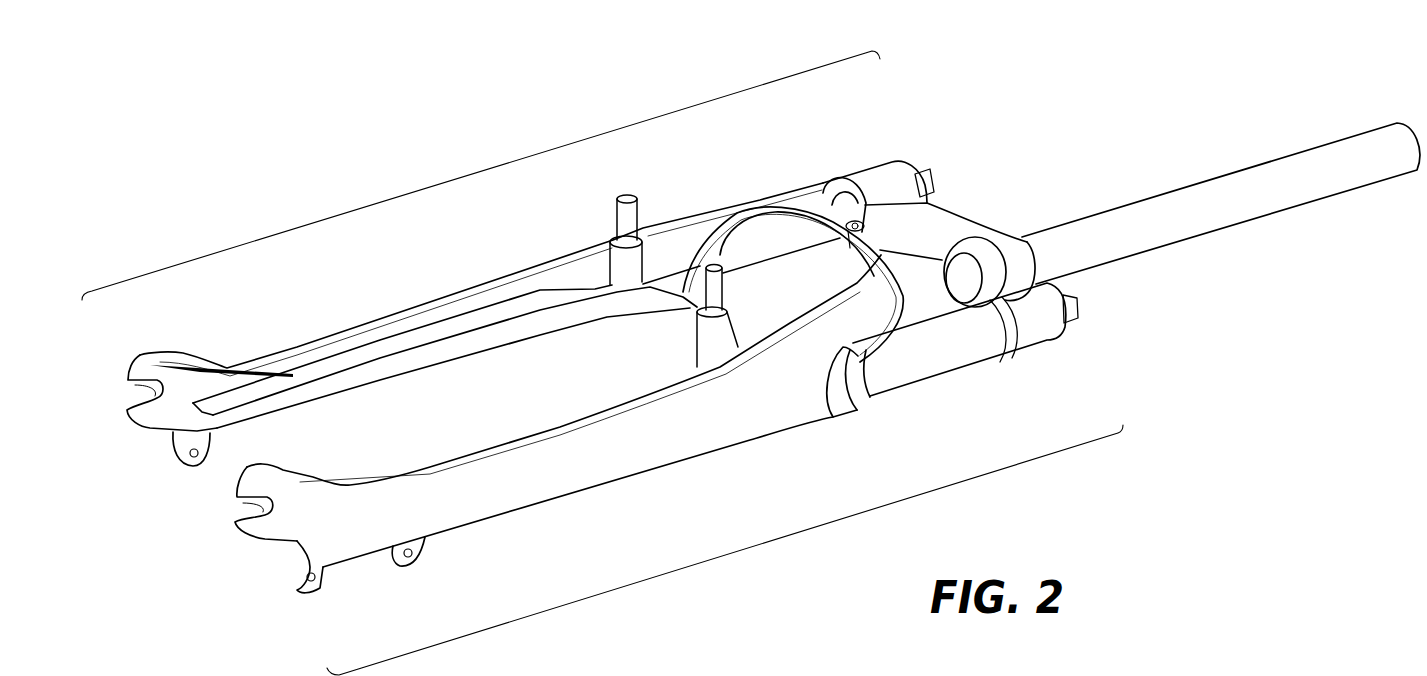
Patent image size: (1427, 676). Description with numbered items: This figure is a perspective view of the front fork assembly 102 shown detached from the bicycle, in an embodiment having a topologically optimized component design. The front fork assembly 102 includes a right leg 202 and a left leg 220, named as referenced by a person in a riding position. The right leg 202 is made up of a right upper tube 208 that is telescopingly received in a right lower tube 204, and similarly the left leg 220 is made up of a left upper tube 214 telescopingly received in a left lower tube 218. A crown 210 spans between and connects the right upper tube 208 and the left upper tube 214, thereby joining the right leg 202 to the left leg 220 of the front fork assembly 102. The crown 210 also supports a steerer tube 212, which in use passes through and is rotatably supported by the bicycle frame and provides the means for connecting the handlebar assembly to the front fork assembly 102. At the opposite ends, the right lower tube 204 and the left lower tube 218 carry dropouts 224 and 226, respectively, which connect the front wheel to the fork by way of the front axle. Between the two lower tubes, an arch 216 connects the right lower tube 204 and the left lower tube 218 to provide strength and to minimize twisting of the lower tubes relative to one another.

The front fork assembly 102 is at (228, 116).
The right leg 202 is at (470, 174).
The right lower tube 204 is at (363, 320).
The right upper tube 208 is at (813, 190).
The crown 210 is at (966, 226).
The steerer tube 212 is at (1297, 152).
The left upper tube 214 is at (953, 358).
The arch 216 is at (873, 308).
The left lower tube 218 is at (547, 500).
The left leg 220 is at (734, 556).
The dropout 224 is at (137, 366).
The dropout 226 is at (243, 479).